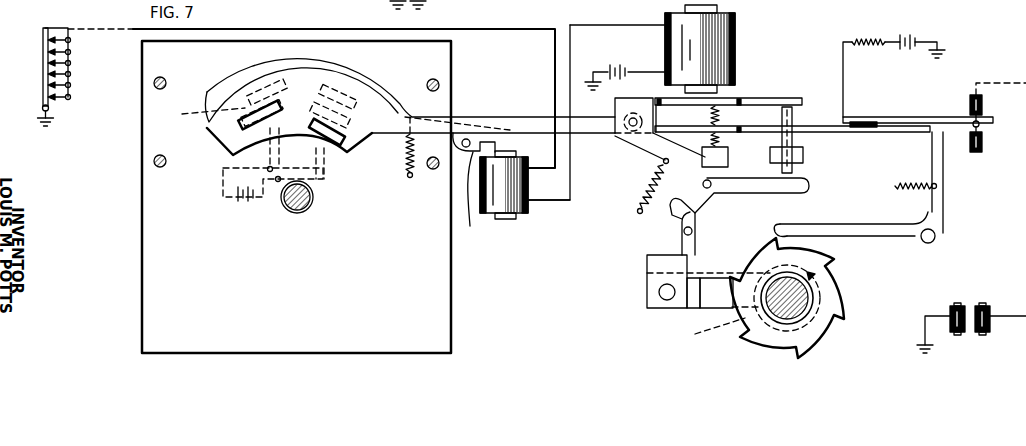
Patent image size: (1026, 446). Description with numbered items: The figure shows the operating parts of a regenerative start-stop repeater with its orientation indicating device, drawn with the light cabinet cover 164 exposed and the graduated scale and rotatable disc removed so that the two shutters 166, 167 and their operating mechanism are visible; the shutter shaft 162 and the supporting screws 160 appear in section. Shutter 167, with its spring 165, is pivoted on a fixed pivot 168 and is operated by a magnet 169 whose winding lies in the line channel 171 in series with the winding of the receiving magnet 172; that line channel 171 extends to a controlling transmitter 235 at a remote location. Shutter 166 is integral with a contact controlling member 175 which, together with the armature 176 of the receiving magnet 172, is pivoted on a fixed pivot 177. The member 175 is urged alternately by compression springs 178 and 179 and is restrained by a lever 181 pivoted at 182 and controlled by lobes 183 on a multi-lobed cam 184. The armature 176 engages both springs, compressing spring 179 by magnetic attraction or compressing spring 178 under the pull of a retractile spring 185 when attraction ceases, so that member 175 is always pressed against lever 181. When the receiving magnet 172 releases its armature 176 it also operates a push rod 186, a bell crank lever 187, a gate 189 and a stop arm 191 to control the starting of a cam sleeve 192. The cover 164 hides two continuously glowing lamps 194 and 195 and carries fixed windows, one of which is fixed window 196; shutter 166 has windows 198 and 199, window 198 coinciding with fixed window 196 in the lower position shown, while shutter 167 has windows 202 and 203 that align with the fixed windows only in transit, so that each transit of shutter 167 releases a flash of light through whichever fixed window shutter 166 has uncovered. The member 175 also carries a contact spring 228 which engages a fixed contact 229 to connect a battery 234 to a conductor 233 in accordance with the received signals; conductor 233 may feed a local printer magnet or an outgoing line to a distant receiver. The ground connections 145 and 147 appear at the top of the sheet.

The ground connection 145 is at (484, 5).
The ground connection 147 is at (425, 7).
The supporting screws 160 is at (440, 82).
The rotatable shutter shaft 162 is at (306, 211).
The light cabinet cover 164 is at (305, 41).
The spring 165 is at (404, 152).
The shutter 166 is at (213, 124).
The shutter 167 is at (213, 62).
The fixed pivot 168 is at (458, 158).
The magnet 169 is at (523, 204).
The line channel 171 is at (537, 33).
The receiving magnet 172 is at (737, 32).
The contact controlling member 175 is at (850, 134).
The armature 176 is at (662, 109).
The fixed pivot 177 is at (628, 118).
The compression spring 178 is at (722, 112).
The compression spring 179 is at (722, 148).
The lever 181 is at (946, 182).
The pivot 182 is at (935, 240).
The lobes 183 is at (768, 241).
The multi-lobed cam 184 is at (838, 300).
The retractile spring 185 is at (640, 202).
The push rod 186 is at (803, 160).
The bell crank lever 187 is at (803, 192).
The gate 189 is at (647, 270).
The stop arm 191 is at (707, 332).
The cam sleeve 192 is at (815, 308).
The electric lamp 194 is at (350, 110).
The electric lamp 195 is at (201, 117).
The fixed window 196 is at (233, 150).
The window 198 is at (250, 130).
The window 199 is at (345, 153).
The window 202 is at (267, 83).
The window 203 is at (345, 88).
The contact spring 228 is at (946, 116).
The fixed contact 229 is at (982, 112).
The conductor 233 is at (1024, 82).
The battery 234 is at (902, 36).
The controlling transmitter 235 is at (44, 62).